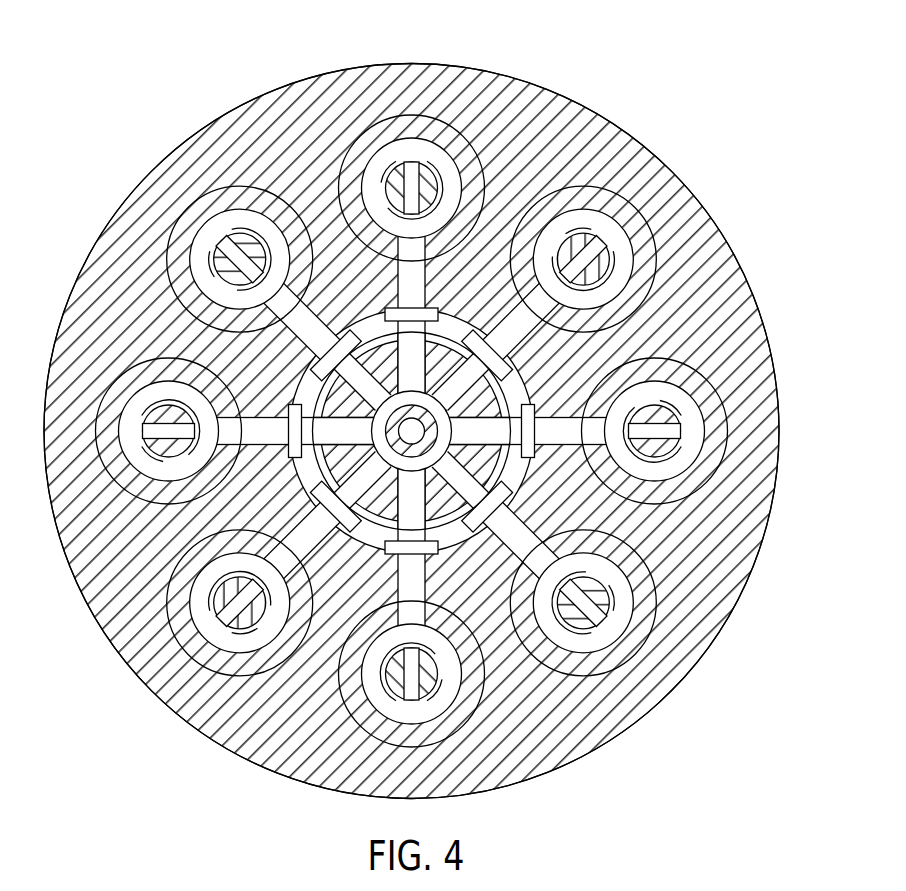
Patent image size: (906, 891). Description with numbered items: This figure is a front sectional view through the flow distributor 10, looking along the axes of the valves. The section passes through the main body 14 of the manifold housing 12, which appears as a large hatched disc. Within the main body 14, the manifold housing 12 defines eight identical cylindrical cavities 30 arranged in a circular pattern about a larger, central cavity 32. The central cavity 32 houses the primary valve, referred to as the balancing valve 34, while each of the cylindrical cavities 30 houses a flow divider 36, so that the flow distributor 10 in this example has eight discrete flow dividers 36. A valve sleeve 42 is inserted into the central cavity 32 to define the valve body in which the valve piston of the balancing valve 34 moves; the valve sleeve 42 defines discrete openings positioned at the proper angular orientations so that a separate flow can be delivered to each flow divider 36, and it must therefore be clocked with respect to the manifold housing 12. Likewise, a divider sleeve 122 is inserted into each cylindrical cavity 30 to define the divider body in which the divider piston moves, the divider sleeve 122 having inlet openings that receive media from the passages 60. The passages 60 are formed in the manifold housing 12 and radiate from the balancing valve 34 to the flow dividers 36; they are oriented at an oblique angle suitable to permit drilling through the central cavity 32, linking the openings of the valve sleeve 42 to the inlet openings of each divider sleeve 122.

The flow distributor 10 is at (415, 439).
The manifold housing 12 is at (527, 75).
The main body 14 is at (615, 140).
The cylindrical cavities 30 is at (432, 113).
The central cavity 32 is at (517, 393).
The balancing valve 34 is at (480, 460).
The flow divider 36 is at (372, 188).
The valve sleeve 42 is at (513, 377).
The passages 60 is at (562, 430).
The divider sleeve 122 is at (374, 128).